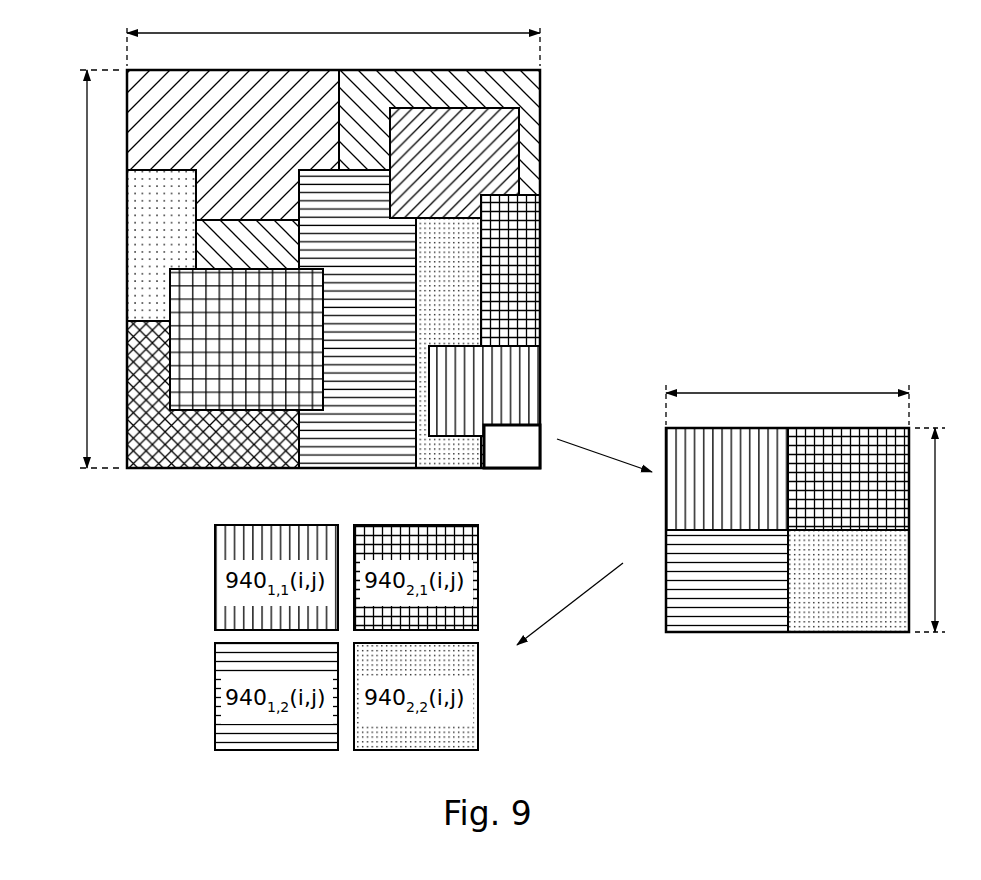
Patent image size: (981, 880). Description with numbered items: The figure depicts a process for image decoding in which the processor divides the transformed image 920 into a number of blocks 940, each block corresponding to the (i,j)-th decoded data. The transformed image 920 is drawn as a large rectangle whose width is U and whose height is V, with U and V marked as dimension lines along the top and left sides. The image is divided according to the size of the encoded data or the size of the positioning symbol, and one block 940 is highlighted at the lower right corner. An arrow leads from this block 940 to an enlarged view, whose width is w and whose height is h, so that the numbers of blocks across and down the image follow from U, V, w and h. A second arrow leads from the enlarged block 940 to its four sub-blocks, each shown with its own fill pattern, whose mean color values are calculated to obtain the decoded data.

The transformed image 920 is at (540, 133).
The block 940 is at (534, 463).
The width of the transformed image U is at (333, 35).
The height of the transformed image V is at (92, 269).
The width of the block w is at (787, 395).
The height of the block h is at (937, 530).